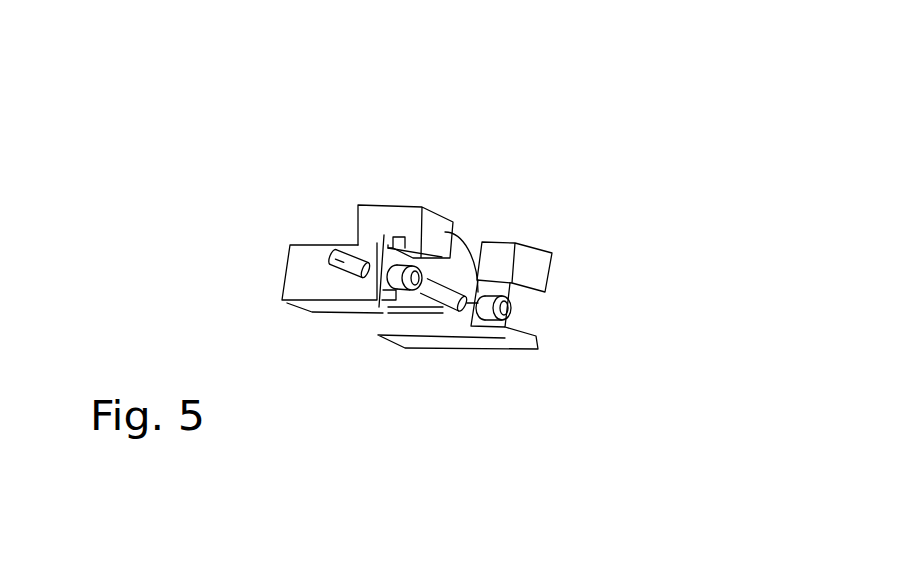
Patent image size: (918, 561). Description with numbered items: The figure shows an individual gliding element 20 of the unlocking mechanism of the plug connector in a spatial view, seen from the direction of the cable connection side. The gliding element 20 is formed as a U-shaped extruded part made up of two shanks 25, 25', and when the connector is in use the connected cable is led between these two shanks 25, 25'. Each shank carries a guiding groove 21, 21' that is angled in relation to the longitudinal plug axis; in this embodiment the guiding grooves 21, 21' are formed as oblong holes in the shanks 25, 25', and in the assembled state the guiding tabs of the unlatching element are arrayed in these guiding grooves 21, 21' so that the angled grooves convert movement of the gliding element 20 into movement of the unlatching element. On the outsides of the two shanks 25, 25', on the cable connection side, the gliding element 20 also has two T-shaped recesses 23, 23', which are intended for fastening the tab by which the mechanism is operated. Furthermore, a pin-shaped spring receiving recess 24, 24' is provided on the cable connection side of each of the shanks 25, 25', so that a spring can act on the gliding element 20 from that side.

The gliding element 20 is at (522, 168).
The guiding groove 21 is at (276, 240).
The guiding groove 21' is at (477, 399).
The T-shaped recess 23 is at (382, 179).
The T-shaped recess 23' is at (554, 343).
The spring receiving recess 24 is at (389, 350).
The spring receiving recess 24' is at (599, 322).
The shank 25 is at (292, 283).
The shank 25' is at (447, 403).